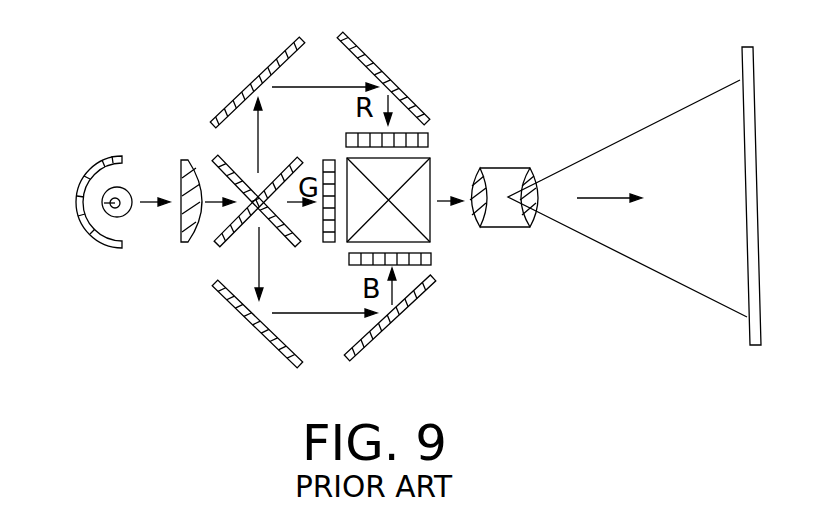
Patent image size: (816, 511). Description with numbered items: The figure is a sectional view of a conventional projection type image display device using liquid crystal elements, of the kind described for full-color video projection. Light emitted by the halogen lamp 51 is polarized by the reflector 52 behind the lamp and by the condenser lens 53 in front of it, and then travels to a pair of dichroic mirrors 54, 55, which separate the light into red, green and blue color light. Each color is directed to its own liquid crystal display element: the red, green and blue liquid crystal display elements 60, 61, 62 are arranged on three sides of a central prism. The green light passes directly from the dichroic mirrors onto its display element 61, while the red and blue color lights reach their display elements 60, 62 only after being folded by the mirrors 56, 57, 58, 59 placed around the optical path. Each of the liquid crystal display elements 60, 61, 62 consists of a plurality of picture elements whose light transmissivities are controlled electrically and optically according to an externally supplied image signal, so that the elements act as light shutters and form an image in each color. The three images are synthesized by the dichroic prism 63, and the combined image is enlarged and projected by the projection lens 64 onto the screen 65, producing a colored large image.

The halogen lamp 51 is at (118, 190).
The reflector 52 is at (77, 180).
The condenser lens 53 is at (185, 158).
The dichroic mirror 54 is at (215, 158).
The dichroic mirror 55 is at (217, 244).
The mirror 56 is at (245, 318).
The mirror 57 is at (235, 98).
The mirror 58 is at (405, 90).
The mirror 59 is at (377, 340).
The liquid crystal display element 60 is at (430, 137).
The liquid crystal display element 61 is at (328, 245).
The liquid crystal display element 62 is at (407, 265).
The dichroic prism 63 is at (432, 242).
The projection lens 64 is at (520, 227).
The screen 65 is at (743, 277).